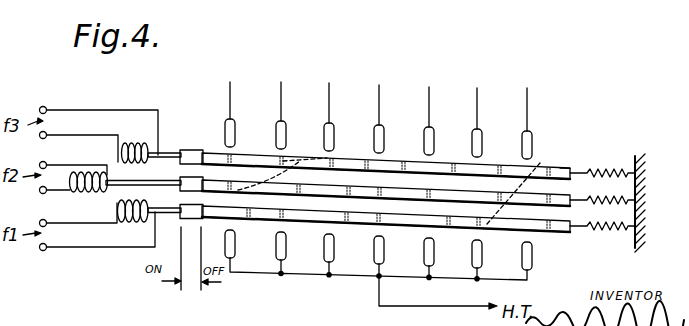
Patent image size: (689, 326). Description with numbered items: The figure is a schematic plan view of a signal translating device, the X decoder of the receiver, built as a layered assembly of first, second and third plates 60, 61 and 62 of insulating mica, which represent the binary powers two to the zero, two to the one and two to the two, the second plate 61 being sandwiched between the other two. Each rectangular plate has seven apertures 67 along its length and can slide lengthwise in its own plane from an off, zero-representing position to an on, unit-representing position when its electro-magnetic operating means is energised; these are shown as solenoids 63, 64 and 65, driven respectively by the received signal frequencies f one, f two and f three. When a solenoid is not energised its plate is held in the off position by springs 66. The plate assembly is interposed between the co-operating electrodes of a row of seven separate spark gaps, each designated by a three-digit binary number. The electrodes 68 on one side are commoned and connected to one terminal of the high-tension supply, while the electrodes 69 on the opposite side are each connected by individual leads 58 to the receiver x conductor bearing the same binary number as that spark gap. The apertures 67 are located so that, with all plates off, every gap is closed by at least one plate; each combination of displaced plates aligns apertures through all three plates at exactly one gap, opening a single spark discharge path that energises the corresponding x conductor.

The leads 58 is at (527, 105).
The first plate 60 is at (560, 233).
The second plate 61 is at (574, 190).
The third plate 62 is at (571, 167).
The solenoid 63 is at (135, 221).
The solenoid 64 is at (95, 193).
The solenoid 65 is at (126, 142).
The springs 66 is at (613, 178).
The apertures 67 is at (308, 168).
The electrodes 68 is at (374, 251).
The electrodes 69 is at (473, 144).